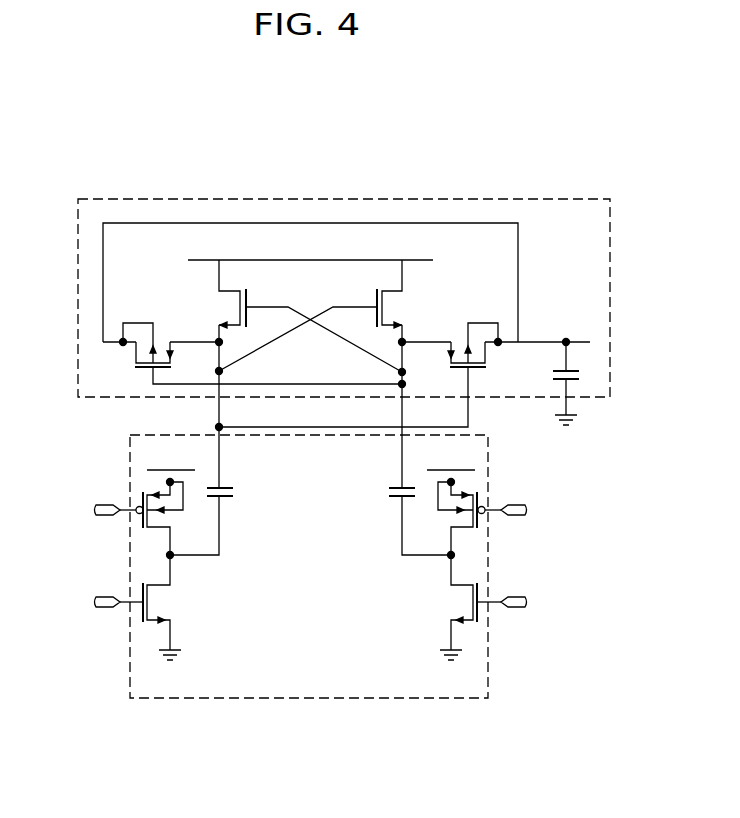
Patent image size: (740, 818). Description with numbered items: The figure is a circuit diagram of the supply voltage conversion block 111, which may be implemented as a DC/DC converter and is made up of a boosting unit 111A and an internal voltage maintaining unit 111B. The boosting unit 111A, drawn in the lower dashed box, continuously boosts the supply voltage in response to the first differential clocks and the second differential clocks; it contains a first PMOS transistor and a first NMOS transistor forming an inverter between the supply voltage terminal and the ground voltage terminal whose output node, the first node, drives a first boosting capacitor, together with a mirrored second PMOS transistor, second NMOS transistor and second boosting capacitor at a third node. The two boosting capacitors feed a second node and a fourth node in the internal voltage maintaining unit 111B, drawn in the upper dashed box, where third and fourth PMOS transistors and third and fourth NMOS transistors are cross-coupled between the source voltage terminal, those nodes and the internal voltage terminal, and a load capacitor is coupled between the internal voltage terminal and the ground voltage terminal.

The supply voltage conversion block 111 is at (91, 147).
The boosting unit 111A is at (129, 464).
The internal voltage maintaining unit 111B is at (78, 228).